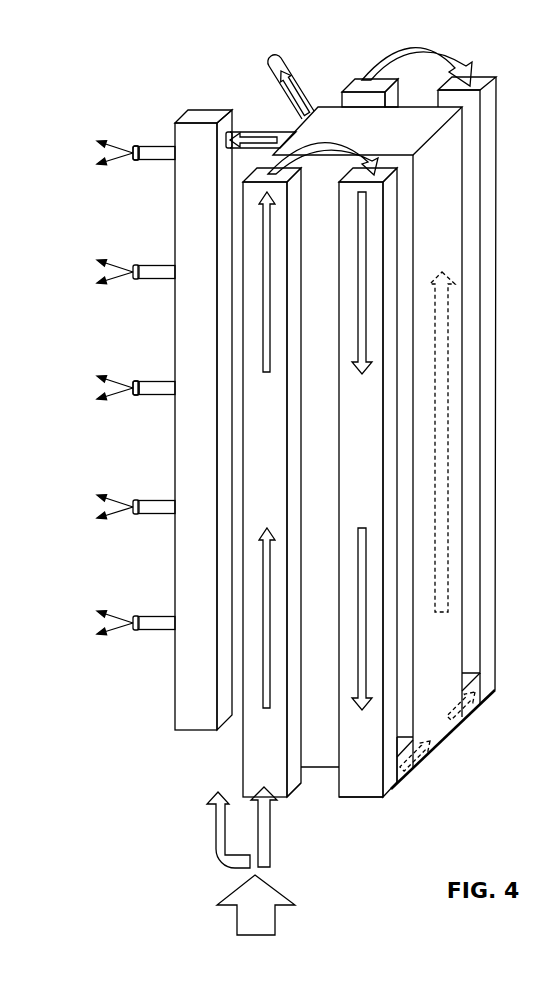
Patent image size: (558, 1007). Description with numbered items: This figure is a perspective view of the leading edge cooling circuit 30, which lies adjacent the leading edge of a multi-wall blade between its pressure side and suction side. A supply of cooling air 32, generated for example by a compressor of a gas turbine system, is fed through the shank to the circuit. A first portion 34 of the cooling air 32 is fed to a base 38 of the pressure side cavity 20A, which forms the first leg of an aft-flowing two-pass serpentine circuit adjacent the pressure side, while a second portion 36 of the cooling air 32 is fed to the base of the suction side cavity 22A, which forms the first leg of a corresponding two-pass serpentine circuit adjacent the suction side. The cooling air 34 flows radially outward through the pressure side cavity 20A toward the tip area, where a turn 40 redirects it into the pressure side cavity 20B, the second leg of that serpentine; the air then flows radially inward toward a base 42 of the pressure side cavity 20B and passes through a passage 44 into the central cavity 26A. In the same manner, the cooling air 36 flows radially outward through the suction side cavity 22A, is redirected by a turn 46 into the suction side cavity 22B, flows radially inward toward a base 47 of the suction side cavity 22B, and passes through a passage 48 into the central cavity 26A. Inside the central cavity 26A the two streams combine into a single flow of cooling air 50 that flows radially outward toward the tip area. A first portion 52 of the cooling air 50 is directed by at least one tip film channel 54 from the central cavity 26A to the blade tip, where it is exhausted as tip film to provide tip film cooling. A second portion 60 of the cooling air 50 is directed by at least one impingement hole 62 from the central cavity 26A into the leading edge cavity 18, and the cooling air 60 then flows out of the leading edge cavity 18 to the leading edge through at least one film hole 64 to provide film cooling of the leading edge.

The leading edge cooling circuit 30 is at (117, 90).
The leading edge cavity 18 is at (193, 110).
The second portion of the cooling air 60 is at (133, 151).
The film hole 64 is at (153, 165).
The impingement hole 62 is at (257, 130).
The tip film channel 54 is at (291, 62).
The first portion of the cooling air 52 is at (302, 92).
The suction side cavity 22A is at (353, 80).
The turn 46 is at (449, 54).
The suction side cavity 22B is at (497, 91).
The turn 40 is at (369, 151).
The central cavity 26A is at (455, 186).
The pressure side cavity 20A is at (248, 459).
The pressure side cavity 20B is at (343, 460).
The single flow of cooling air 50 is at (448, 350).
The base of the suction side cavity 47 is at (496, 691).
The passage 48 is at (476, 712).
The passage 44 is at (413, 772).
The base of the pressure side cavity 42 is at (362, 799).
The base of the pressure side cavity 38 is at (289, 788).
The first portion of the cooling air 34 is at (270, 855).
The second portion of the cooling air 36 is at (212, 842).
The cooling air 32 is at (244, 924).